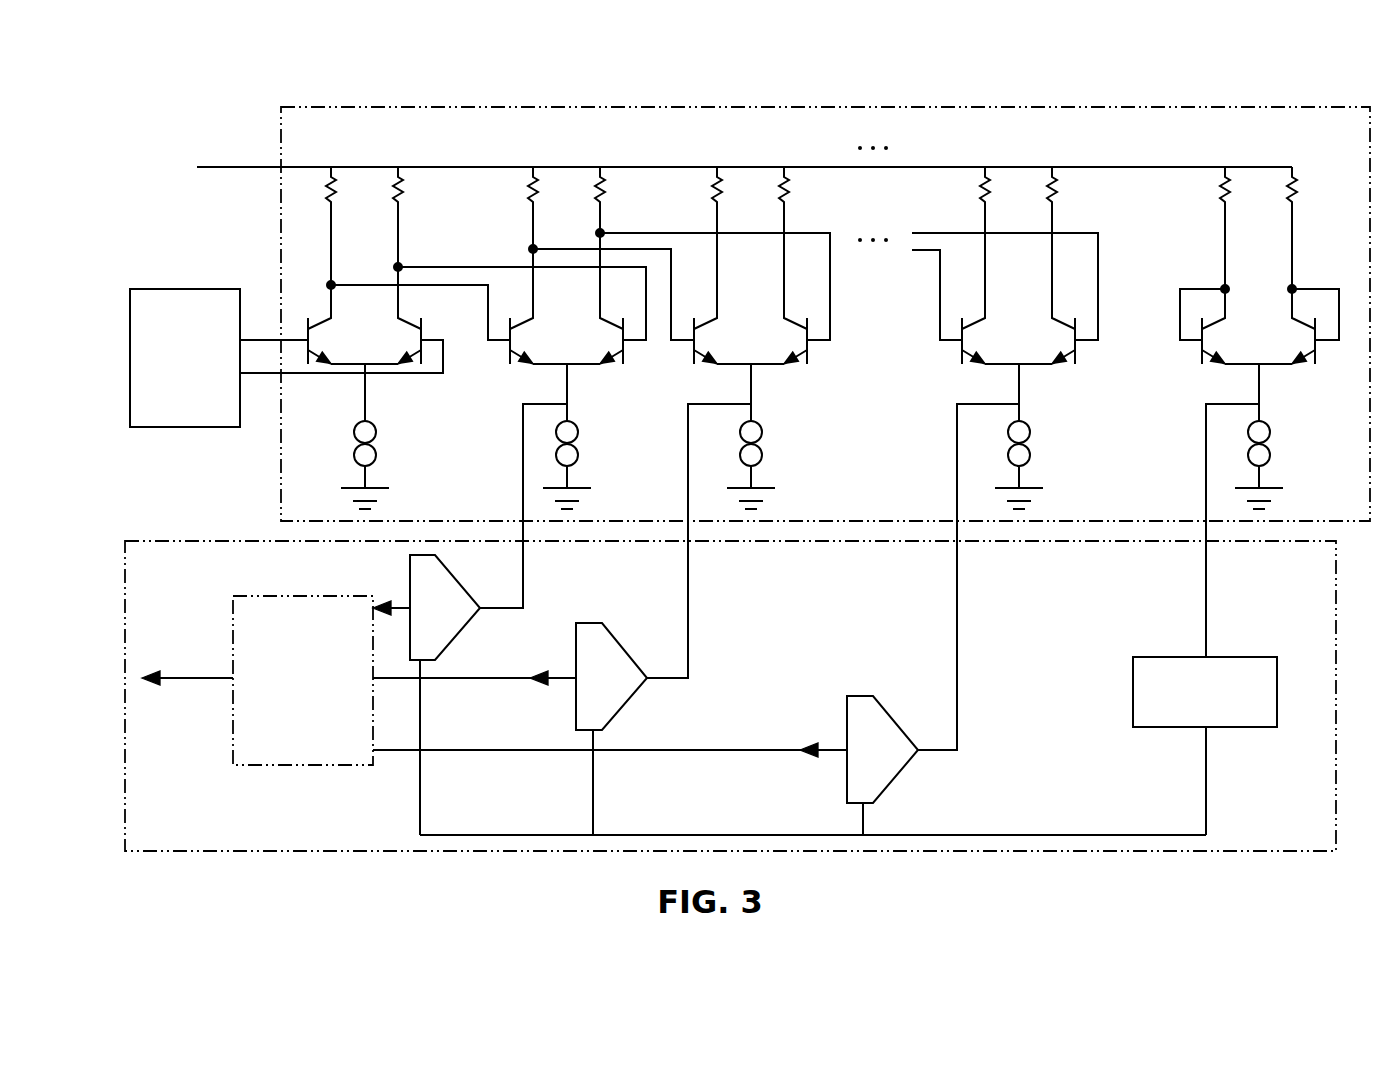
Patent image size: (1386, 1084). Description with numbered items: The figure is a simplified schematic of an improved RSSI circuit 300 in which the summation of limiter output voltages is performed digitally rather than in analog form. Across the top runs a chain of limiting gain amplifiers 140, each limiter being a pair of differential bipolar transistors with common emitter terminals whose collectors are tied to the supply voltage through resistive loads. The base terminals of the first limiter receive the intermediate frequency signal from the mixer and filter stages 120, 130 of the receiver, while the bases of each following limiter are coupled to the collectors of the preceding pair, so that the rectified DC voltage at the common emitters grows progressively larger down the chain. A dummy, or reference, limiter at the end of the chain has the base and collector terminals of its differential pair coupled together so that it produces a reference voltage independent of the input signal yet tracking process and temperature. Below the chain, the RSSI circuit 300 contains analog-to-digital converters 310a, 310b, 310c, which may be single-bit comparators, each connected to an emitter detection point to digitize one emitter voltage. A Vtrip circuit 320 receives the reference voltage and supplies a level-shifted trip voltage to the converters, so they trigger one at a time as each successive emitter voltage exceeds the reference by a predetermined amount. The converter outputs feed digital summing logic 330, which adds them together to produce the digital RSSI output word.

The chain of limiting gain amplifiers 140 is at (332, 104).
The mixer stage 120 is at (201, 286).
The filter stage 130 is at (185, 358).
The RSSI circuit 300 is at (183, 537).
The analog-to-digital converter 310a is at (426, 695).
The analog-to-digital converter 310b is at (510, 729).
The analog-to-digital converter 310c is at (645, 765).
The Vtrip circuit 320 is at (1205, 745).
The digital summing logic 330 is at (303, 680).